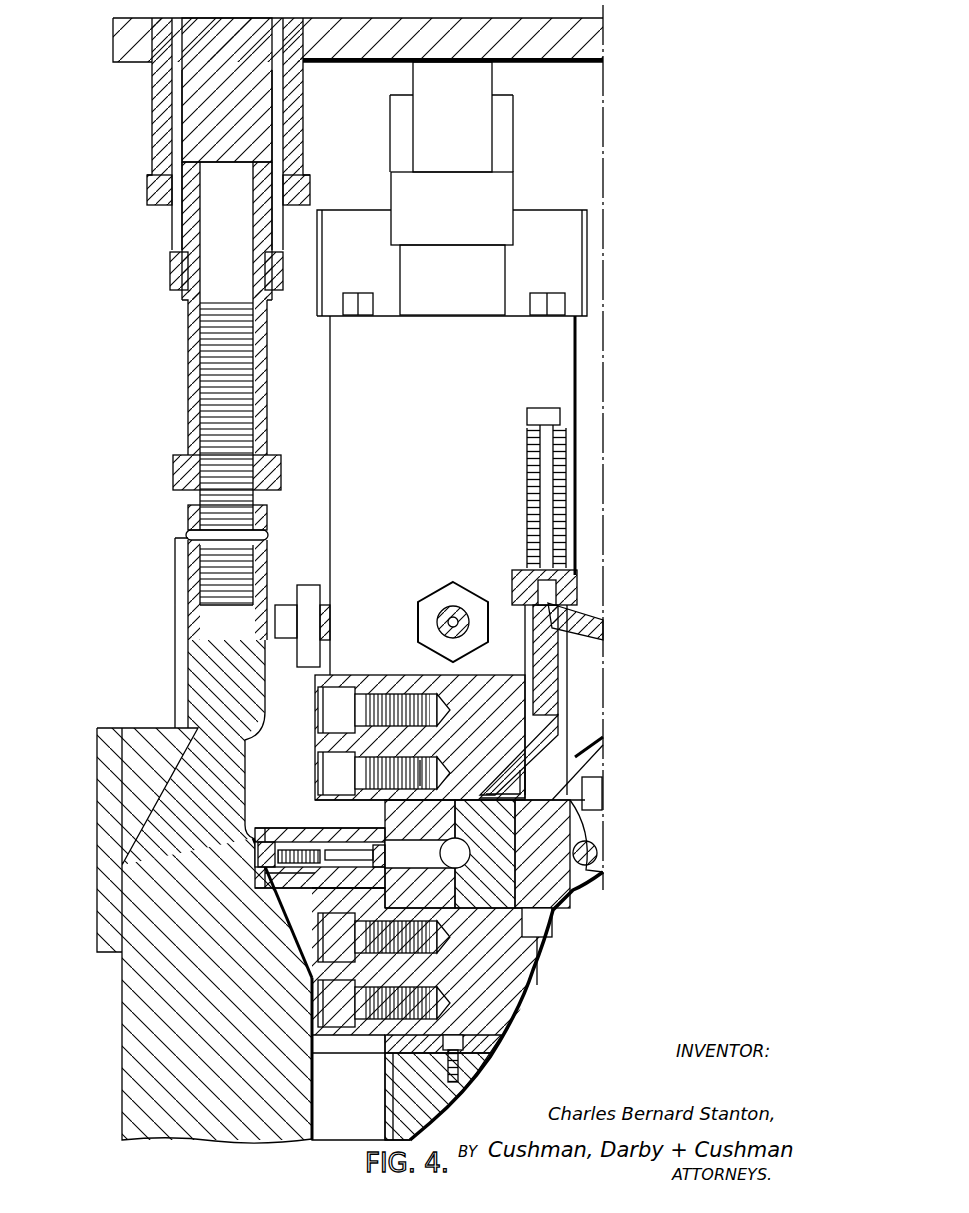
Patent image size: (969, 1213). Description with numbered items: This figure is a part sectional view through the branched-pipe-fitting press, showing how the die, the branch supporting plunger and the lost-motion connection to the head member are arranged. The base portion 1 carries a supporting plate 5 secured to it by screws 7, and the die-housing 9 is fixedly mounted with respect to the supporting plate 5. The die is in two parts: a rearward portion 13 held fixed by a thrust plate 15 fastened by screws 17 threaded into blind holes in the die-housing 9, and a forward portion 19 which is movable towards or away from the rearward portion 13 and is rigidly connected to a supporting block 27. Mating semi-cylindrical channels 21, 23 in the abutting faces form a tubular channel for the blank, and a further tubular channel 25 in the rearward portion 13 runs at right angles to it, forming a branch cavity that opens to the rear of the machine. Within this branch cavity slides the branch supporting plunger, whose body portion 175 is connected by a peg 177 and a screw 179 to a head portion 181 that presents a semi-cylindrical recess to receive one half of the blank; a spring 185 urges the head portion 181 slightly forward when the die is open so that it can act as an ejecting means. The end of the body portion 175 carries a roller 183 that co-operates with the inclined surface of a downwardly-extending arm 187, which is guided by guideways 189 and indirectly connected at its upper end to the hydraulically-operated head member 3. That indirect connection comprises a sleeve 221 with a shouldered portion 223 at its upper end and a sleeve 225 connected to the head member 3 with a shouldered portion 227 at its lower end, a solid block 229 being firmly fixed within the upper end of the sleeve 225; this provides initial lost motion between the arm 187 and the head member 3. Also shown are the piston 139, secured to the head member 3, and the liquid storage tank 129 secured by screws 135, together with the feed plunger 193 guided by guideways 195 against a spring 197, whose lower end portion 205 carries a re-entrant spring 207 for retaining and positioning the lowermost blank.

The base portion 1 is at (410, 1100).
The head member 3 is at (593, 32).
The supporting plate 5 is at (392, 1040).
The screws 7 is at (460, 1067).
The die-housing 9 is at (503, 978).
The rearward portion of the die 13 is at (513, 1005).
The thrust plate 15 is at (270, 940).
The screws 17 is at (335, 712).
The forward portion of the die 19 is at (540, 777).
The semi-cylindrical channel 21 is at (467, 850).
The semi-cylindrical channel 23 is at (462, 862).
The tubular channel 25 is at (414, 764).
The supporting block 27 is at (552, 818).
The liquid storage tank 129 is at (587, 258).
The screws 135 is at (363, 306).
The piston 139 is at (462, 300).
The body portion 175 is at (328, 900).
The peg 177 is at (328, 827).
The screw 179 is at (265, 905).
The head portion 181 is at (443, 872).
The roller 183 is at (262, 857).
The spring 185 is at (290, 878).
The downwardly-extending arm 187 is at (156, 1037).
The guideways 189 is at (146, 768).
The plunger 193 is at (540, 645).
The guideways 195 is at (578, 578).
The spring 197 is at (560, 438).
The lower end portion 205 is at (585, 705).
The re-entrant spring 207 is at (613, 700).
The sleeve 221 is at (196, 372).
The shouldered portion 223 is at (188, 172).
The sleeve 225 is at (176, 119).
The shouldered portion 227 is at (176, 263).
The solid block 229 is at (190, 47).